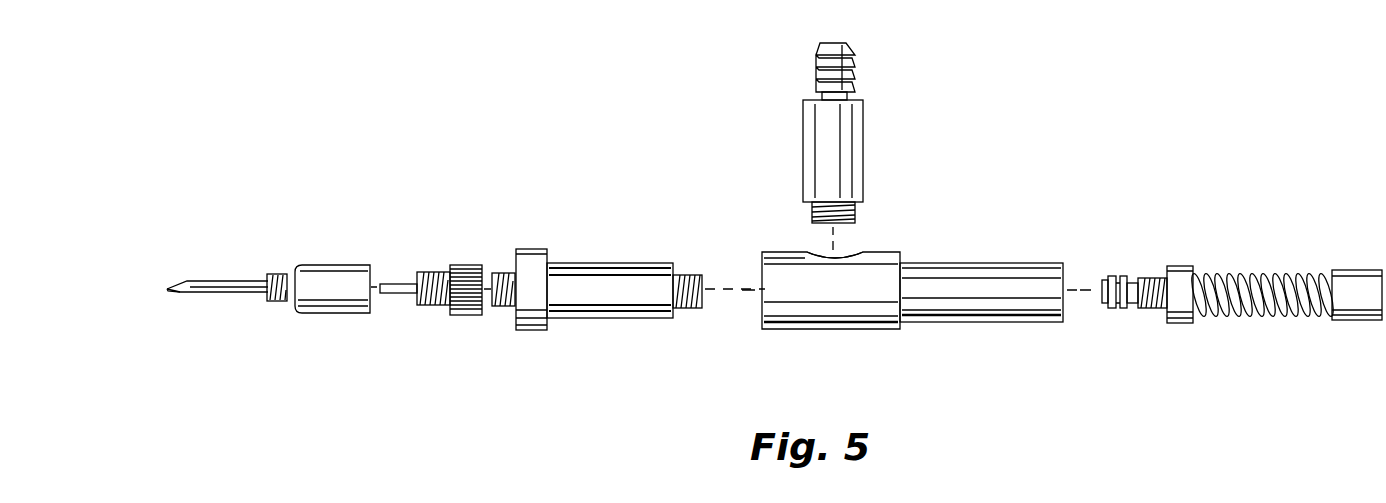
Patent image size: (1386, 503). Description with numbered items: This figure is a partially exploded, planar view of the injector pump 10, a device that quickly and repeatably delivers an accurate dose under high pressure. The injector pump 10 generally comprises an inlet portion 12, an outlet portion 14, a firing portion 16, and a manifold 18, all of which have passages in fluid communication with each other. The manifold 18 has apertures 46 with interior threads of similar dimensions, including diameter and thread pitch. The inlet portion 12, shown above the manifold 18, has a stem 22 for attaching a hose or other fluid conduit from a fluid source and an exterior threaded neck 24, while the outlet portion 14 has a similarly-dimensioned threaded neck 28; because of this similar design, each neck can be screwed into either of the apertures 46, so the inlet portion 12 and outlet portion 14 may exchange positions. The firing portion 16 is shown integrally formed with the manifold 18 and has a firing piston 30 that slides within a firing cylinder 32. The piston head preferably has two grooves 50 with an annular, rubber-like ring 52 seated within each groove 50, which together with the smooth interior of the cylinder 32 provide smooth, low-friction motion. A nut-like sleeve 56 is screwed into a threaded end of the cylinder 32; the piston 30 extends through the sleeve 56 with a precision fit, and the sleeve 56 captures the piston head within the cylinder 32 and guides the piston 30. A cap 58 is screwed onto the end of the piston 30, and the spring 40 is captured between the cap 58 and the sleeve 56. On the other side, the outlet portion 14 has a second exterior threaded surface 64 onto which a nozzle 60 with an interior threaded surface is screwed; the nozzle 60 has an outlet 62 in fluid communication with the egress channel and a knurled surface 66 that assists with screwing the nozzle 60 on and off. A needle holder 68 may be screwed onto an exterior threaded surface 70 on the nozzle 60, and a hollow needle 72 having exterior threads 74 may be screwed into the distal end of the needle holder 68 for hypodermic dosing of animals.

The injector pump 10 is at (1000, 198).
The inlet portion 12 is at (770, 137).
The outlet portion 14 is at (595, 355).
The firing portion 16 is at (1082, 355).
The manifold 18 is at (880, 352).
The stem 22 is at (817, 72).
The exterior threaded neck 24 is at (857, 218).
The threaded neck 28 is at (694, 310).
The firing piston 30 is at (1274, 245).
The firing cylinder 32 is at (997, 355).
The spring 40 is at (1275, 313).
The apertures 46 is at (800, 240).
The grooves 50 is at (1123, 277).
The annular rubber-like ring 52 is at (1112, 277).
The nut-like sleeve 56 is at (1183, 265).
The cap 58 is at (1353, 272).
The nozzle 60 is at (430, 222).
The outlet 62 is at (393, 297).
The second exterior threaded surface 64 is at (508, 307).
The knurled surface 66 is at (470, 265).
The needle holder 68 is at (342, 265).
The exterior threaded surface 70 is at (435, 307).
The hollow needle 72 is at (222, 280).
The exterior threads 74 is at (277, 273).